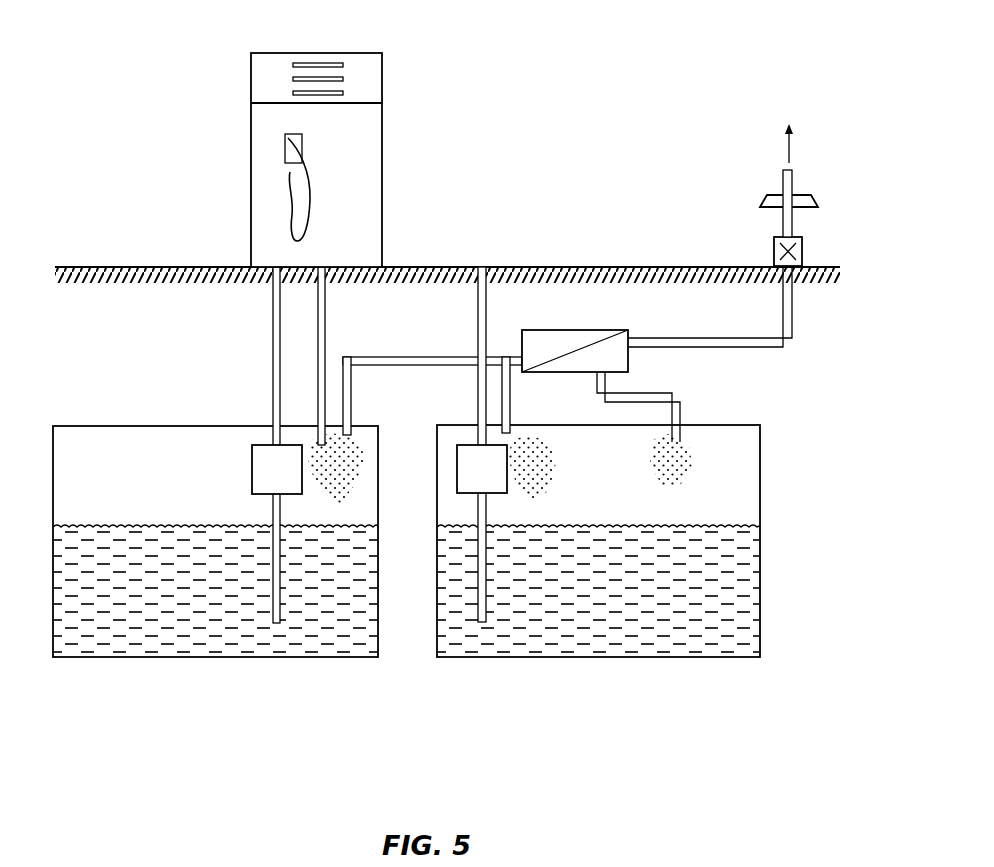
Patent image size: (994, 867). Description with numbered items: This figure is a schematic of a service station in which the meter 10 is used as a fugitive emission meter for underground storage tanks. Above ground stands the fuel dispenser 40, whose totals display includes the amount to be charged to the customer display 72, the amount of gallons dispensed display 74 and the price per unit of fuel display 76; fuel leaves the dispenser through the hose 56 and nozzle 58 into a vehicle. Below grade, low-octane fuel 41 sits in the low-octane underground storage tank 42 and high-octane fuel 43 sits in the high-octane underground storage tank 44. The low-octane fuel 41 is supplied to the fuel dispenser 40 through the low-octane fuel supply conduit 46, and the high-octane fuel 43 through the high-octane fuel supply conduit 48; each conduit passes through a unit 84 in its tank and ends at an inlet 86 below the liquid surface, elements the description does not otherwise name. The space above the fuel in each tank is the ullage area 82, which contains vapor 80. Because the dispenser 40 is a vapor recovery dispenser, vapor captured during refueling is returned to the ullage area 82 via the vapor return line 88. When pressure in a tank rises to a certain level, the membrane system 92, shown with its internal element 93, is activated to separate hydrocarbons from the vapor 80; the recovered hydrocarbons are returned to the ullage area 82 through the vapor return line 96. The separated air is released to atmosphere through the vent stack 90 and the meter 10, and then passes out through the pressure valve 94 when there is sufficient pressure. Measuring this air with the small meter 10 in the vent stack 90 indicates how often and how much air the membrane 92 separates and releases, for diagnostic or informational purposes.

The fuel dispenser 40 is at (306, 135).
The amount to be charged to the customer display 72 is at (296, 63).
The amount of gallons dispensed display 74 is at (293, 78).
The price per unit of fuel display 76 is at (293, 93).
The nozzle 58 is at (301, 157).
The hose 56 is at (311, 212).
The low-octane fuel supply conduit 46 is at (272, 328).
The vapor return line 88 is at (326, 305).
The high-octane fuel supply conduit 48 is at (488, 312).
The vent stack 90 is at (405, 356).
The membrane system 92 is at (616, 326).
The membrane 93 is at (585, 366).
The vapor return line 96 is at (680, 440).
The pressure valve 94 is at (815, 201).
The meter 10 is at (803, 250).
The vapor 80 is at (357, 462).
The ullage area 82 is at (70, 468).
The submersible pump 84 is at (252, 453).
The pipe inlet 86 is at (277, 626).
The low-octane fuel 41 is at (168, 643).
The high-octane fuel 43 is at (625, 643).
The low-octane underground storage tank 42 is at (118, 425).
The high-octane underground storage tank 44 is at (761, 504).